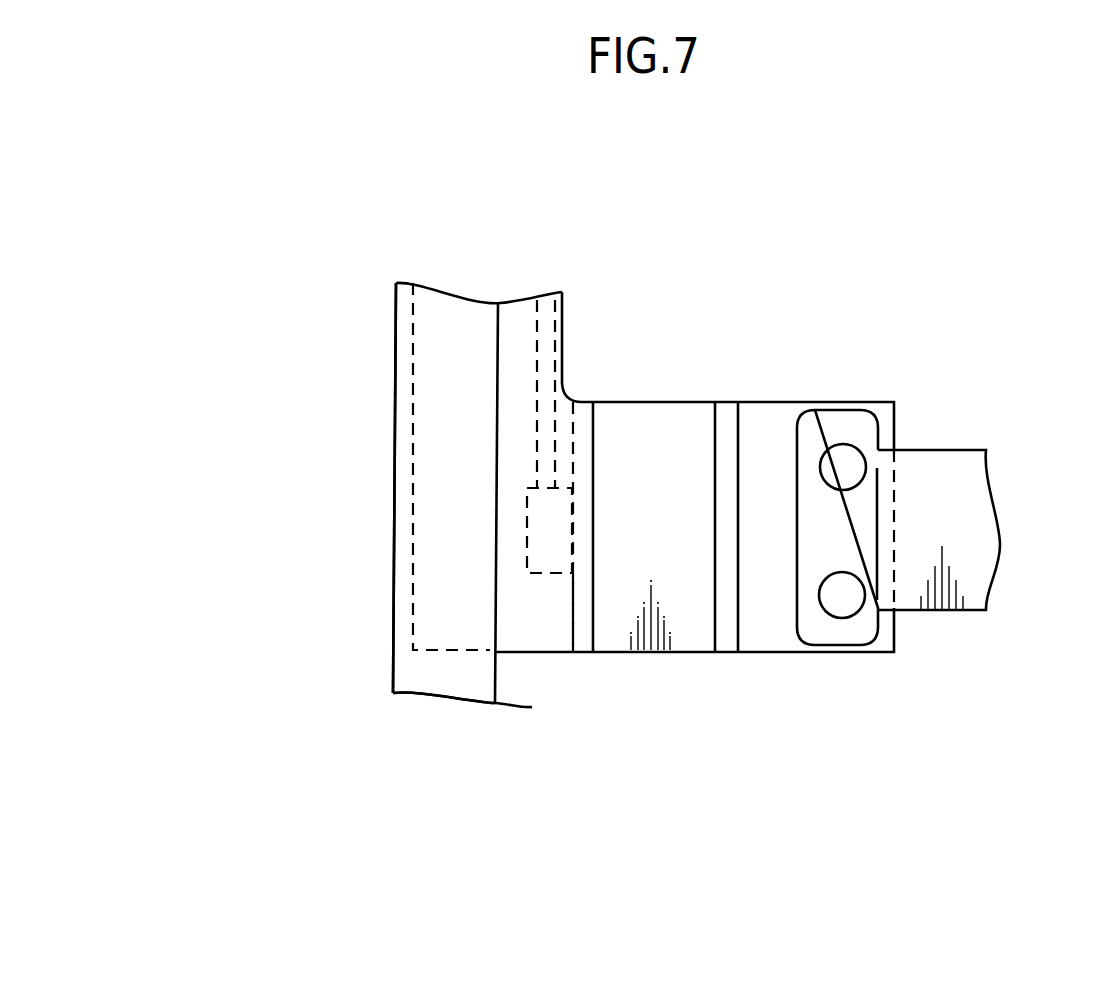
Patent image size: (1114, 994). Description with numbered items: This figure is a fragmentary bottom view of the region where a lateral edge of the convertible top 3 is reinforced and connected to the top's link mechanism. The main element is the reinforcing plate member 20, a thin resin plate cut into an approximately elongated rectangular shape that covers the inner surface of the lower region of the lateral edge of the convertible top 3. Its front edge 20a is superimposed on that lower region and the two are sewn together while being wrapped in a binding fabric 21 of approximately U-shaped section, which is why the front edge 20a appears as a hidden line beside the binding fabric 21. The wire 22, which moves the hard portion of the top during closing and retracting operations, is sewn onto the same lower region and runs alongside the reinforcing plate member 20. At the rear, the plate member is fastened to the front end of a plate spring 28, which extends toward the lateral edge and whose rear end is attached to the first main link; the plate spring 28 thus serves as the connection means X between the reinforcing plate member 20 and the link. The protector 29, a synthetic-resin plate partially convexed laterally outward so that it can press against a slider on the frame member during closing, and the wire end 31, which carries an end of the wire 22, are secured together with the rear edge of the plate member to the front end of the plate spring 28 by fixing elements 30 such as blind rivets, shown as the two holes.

The convertible top 3 is at (388, 702).
The reinforcing plate member 20 is at (470, 652).
The front edge 20a is at (412, 448).
The binding fabric 21 is at (393, 552).
The wire 22 is at (537, 363).
The plate spring 28 is at (942, 450).
The protector 29 is at (657, 410).
The fixing element 30 is at (845, 444).
The wire end 31 is at (570, 616).